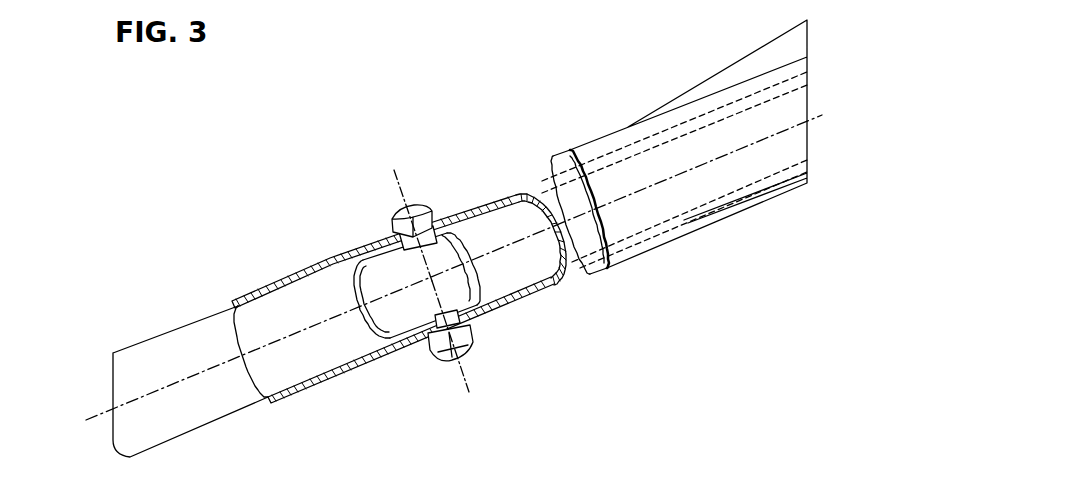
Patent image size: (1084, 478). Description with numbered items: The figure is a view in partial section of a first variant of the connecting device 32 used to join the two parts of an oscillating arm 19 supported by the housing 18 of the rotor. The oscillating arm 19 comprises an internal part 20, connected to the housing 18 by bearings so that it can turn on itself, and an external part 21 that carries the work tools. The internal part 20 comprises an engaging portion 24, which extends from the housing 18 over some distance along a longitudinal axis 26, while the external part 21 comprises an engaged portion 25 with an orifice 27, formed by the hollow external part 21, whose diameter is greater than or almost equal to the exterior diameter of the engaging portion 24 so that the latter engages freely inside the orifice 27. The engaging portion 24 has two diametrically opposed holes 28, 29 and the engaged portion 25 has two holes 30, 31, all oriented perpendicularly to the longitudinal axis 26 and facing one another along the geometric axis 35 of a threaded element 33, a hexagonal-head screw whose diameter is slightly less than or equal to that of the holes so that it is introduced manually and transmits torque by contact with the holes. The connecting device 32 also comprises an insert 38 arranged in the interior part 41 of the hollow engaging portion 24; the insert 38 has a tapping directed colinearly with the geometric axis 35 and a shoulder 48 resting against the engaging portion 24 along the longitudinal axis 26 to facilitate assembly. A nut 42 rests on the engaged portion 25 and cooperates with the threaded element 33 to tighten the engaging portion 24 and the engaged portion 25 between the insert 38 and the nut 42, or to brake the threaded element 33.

The housing 18 is at (707, 92).
The oscillating arm 19 is at (138, 341).
The internal part 20 is at (590, 162).
The external part 21 is at (223, 318).
The engaging portion 24 is at (465, 200).
The engaged portion 25 is at (355, 257).
The longitudinal axis 26 is at (210, 372).
The orifice 27 is at (308, 302).
The hole 28 is at (451, 216).
The hole 29 is at (479, 308).
The hole 30 is at (398, 235).
The hole 31 is at (427, 338).
The connecting device 32 is at (404, 206).
The threaded element 33 is at (425, 254).
The geometric axis 35 is at (462, 388).
The insert 38 is at (373, 320).
The interior part 41 is at (507, 263).
The nut 42 is at (470, 353).
The shoulder 48 is at (402, 348).